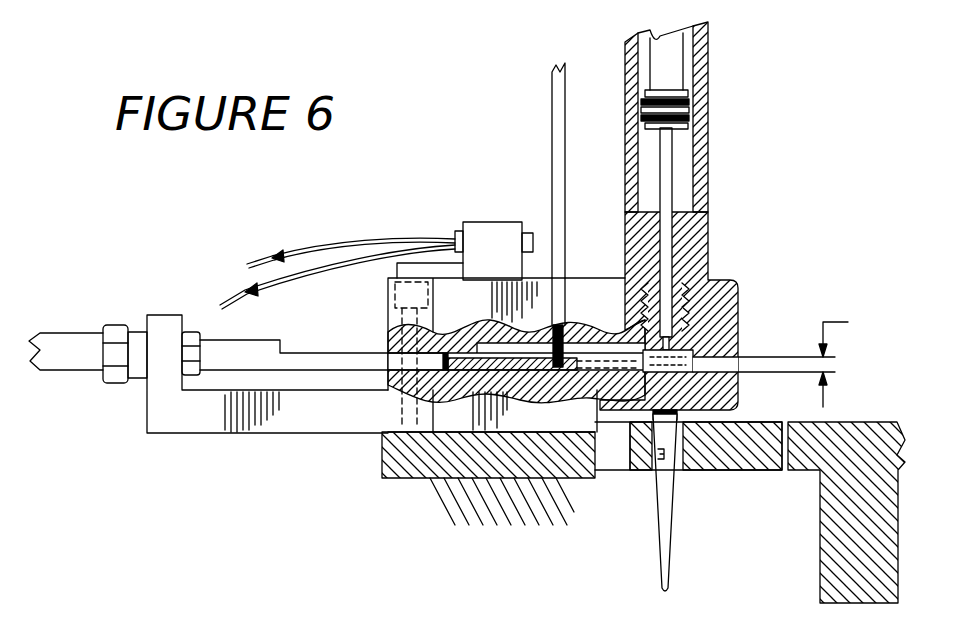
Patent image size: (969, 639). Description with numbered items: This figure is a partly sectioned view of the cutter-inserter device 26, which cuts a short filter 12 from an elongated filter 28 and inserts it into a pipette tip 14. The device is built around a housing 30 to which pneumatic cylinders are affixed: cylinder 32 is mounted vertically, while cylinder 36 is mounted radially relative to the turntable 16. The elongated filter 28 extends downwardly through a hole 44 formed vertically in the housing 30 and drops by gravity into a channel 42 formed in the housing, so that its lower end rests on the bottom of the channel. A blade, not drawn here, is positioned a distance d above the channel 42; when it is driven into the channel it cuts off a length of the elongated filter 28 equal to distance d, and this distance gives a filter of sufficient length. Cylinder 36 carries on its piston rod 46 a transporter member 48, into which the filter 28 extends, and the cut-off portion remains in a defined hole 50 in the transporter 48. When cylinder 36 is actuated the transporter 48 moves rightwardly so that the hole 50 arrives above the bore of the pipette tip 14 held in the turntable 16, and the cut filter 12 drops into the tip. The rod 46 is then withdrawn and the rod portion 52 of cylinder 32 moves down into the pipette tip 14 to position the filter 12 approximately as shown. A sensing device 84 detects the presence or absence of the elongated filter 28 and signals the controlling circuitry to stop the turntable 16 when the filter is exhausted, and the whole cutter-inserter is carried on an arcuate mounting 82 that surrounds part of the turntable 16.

The cutter-inserter device 26 is at (459, 138).
The elongated filter 28 is at (555, 133).
The housing 30 is at (577, 310).
The cylinder 32 is at (700, 224).
The cylinder 36 is at (74, 350).
The channel 42 is at (703, 352).
The hole 44 is at (580, 315).
The piston rod 46 is at (242, 348).
The transporter member 48 is at (387, 358).
The hole 50 is at (598, 417).
The rod portion 52 is at (665, 268).
The filter 12 is at (672, 454).
The pipette tip 14 is at (665, 526).
The turntable 16 is at (843, 427).
The mounting 82 is at (455, 458).
The sensing device 84 is at (487, 240).
The distance d is at (846, 354).